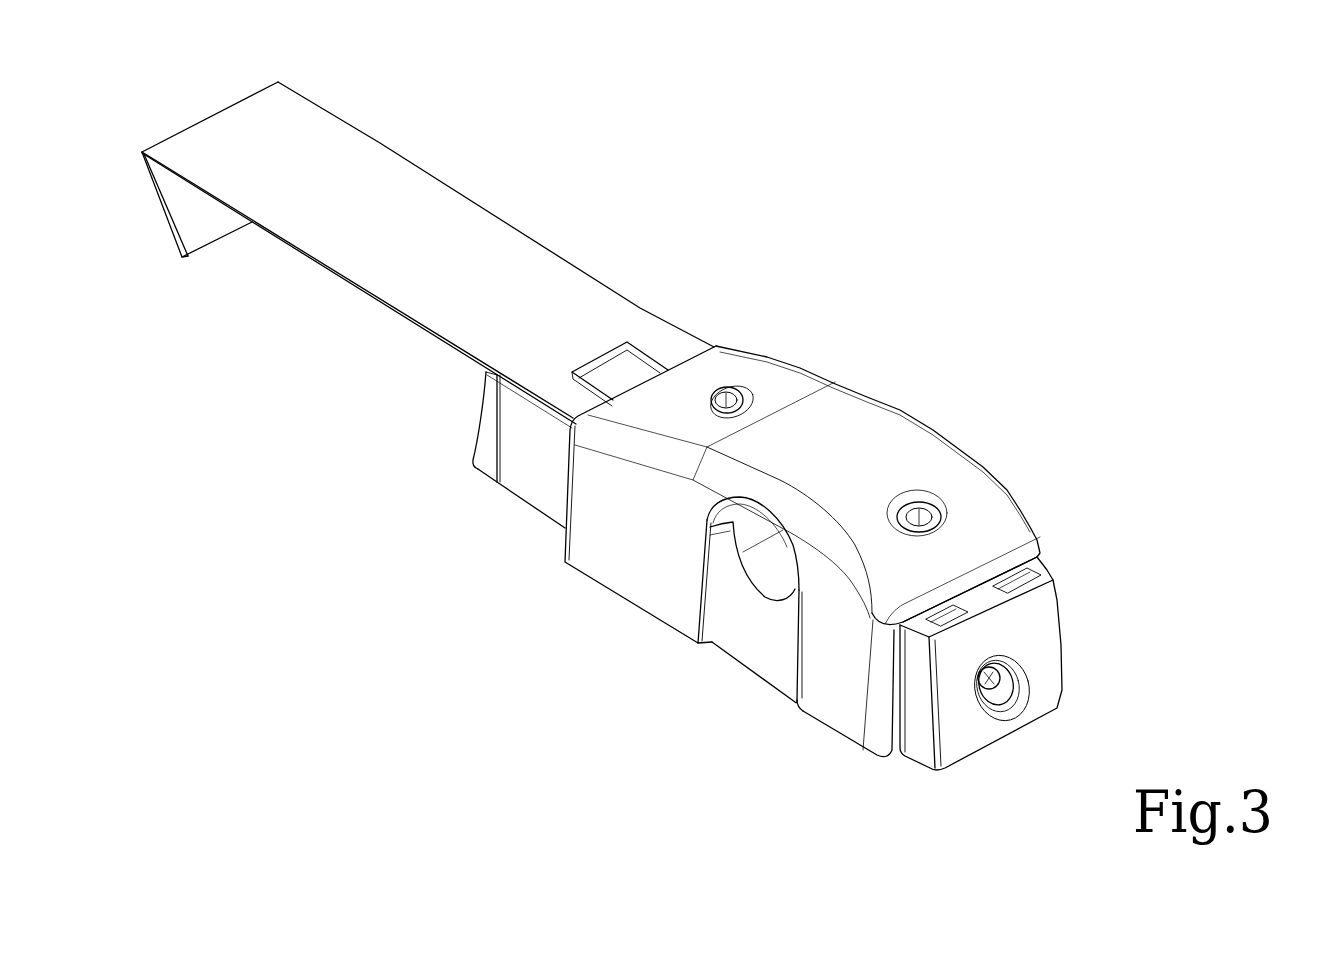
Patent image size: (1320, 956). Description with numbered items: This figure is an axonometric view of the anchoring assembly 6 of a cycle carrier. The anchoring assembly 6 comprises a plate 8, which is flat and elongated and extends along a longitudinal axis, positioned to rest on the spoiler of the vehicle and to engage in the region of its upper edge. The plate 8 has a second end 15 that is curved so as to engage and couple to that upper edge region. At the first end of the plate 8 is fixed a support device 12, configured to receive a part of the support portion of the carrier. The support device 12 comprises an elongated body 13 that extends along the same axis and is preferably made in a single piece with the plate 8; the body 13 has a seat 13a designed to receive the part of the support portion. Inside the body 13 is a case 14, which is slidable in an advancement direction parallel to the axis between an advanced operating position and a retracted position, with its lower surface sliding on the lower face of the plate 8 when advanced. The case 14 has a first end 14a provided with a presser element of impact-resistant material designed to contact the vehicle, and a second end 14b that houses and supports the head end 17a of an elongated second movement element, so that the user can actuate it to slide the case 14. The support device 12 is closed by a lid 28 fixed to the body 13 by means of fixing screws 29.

The anchoring assembly 6 is at (833, 140).
The plate 8 is at (441, 260).
The support device 12 is at (618, 523).
The elongated body 13 is at (770, 643).
The seat 13a is at (751, 596).
The case 14 is at (527, 475).
The first end 14a is at (490, 442).
The second end 14b is at (1028, 618).
The second end 15 is at (192, 223).
The head end 17a is at (987, 696).
The lid 28 is at (828, 438).
The fixing screws 29 is at (732, 387).